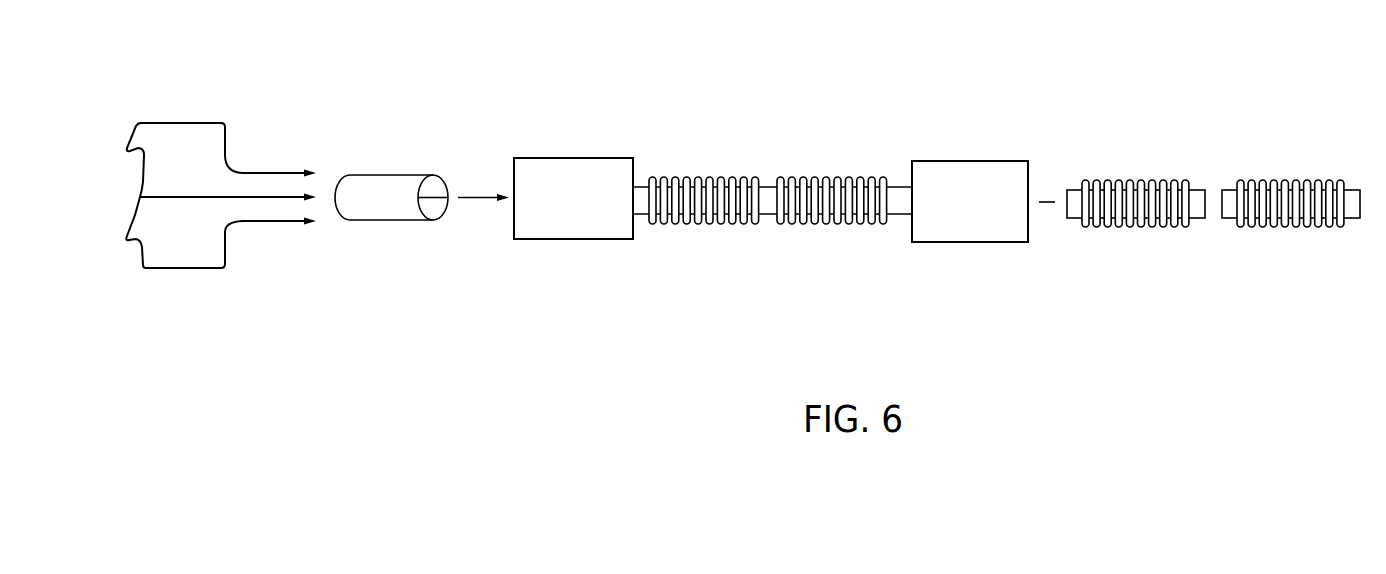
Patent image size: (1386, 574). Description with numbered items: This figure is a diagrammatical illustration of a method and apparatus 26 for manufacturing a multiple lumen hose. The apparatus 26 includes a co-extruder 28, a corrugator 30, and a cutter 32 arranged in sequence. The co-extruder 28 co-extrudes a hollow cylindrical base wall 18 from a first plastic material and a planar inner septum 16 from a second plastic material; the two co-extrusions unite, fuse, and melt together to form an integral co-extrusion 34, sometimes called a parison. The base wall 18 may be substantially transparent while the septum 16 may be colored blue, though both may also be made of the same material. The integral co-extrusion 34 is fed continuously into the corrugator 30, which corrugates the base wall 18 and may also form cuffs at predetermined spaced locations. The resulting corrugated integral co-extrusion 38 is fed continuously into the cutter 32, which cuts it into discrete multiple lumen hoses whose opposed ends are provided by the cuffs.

The septum 16 is at (440, 205).
The base wall 18 is at (388, 222).
The apparatus 26 is at (771, 168).
The co-extruder 28 is at (234, 104).
The corrugator 30 is at (569, 154).
The cutter 32 is at (992, 156).
The integral co-extrusion 34 is at (422, 190).
The corrugated integral co-extrusion 38 is at (772, 254).